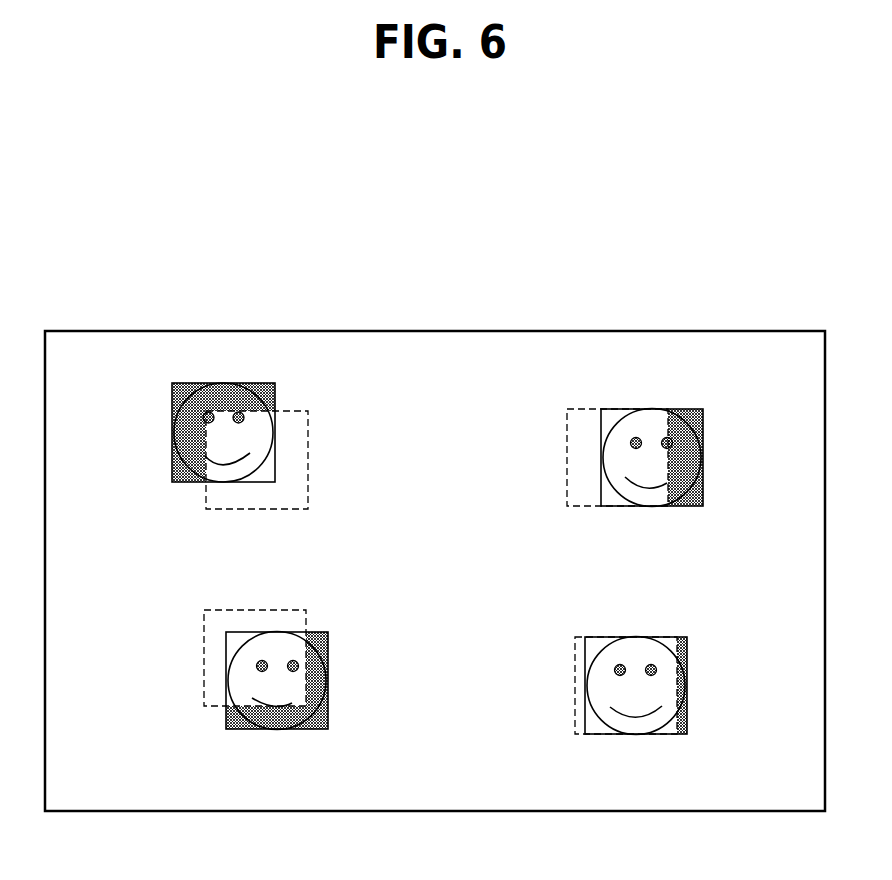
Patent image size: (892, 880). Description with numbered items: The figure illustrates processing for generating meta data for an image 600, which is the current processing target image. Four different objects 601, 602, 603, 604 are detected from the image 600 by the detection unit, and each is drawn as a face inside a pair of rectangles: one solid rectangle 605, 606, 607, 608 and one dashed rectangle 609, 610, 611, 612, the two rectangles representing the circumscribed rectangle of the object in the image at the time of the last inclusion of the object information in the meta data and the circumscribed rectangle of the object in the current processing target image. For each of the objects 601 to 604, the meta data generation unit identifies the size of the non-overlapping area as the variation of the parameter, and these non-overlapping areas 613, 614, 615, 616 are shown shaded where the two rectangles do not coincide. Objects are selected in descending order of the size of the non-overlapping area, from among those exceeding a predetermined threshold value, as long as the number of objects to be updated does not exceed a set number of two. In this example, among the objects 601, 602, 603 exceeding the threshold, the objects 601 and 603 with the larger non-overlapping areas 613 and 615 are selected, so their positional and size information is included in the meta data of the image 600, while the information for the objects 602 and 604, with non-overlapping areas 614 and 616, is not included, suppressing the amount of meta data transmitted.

The image 600 is at (492, 332).
The object 601 is at (223, 470).
The object 602 is at (643, 495).
The object 603 is at (267, 728).
The object 604 is at (625, 722).
The captured image 605 is at (275, 383).
The captured image 606 is at (625, 408).
The captured image 607 is at (222, 728).
The captured image 608 is at (660, 637).
The cropping region 609 is at (308, 440).
The cropping region 610 is at (567, 440).
The cropping region 611 is at (204, 663).
The cropping region 612 is at (575, 665).
The non-overlapping area 613 is at (170, 398).
The non-overlapping area 614 is at (703, 428).
The non-overlapping area 615 is at (327, 652).
The non-overlapping area 616 is at (688, 653).